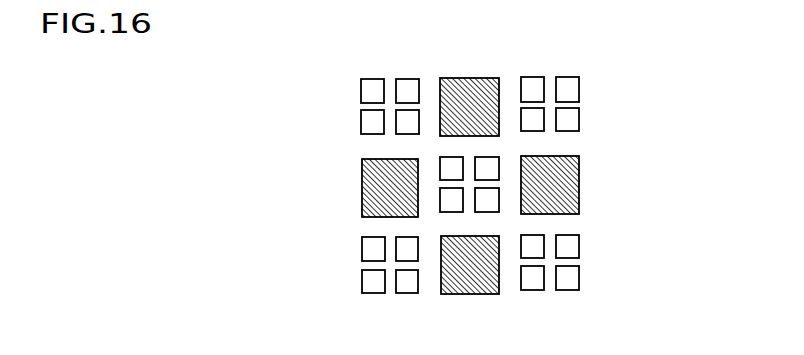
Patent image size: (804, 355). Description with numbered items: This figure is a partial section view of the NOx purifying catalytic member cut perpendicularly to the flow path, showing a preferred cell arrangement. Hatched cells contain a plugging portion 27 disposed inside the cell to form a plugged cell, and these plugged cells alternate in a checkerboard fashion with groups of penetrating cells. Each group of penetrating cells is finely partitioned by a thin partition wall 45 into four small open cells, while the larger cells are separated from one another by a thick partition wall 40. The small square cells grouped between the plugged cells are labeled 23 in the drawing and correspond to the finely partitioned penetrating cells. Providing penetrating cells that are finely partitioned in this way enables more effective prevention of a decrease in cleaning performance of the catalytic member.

The thick partition wall 40 is at (561, 142).
The small pixel electrodes (33c) 23 is at (363, 120).
The plugging portion 27 is at (568, 184).
The thin partition wall 45 is at (570, 262).